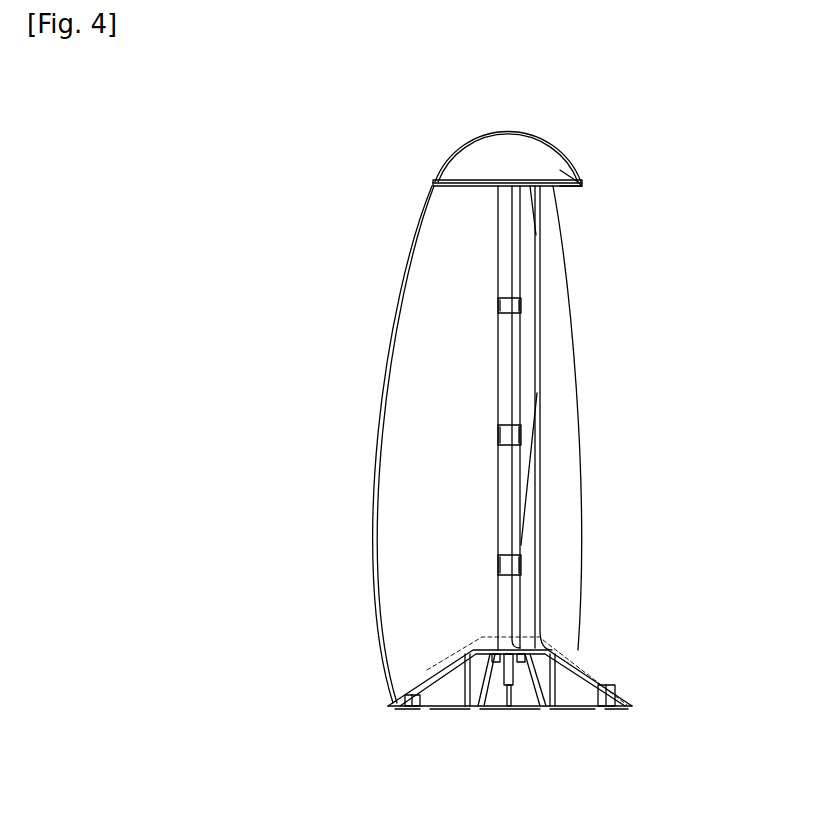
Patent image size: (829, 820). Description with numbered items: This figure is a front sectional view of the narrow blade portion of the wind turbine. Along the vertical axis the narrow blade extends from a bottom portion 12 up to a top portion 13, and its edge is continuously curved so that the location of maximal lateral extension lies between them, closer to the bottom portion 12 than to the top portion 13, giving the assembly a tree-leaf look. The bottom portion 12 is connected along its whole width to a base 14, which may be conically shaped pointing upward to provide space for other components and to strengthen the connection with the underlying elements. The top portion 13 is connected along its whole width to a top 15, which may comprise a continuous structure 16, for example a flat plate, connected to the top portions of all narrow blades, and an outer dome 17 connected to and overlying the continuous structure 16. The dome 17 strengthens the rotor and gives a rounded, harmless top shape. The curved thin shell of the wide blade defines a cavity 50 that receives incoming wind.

The bottom portion 12 is at (428, 672).
The top portion 13 is at (467, 185).
The base 14 is at (437, 685).
The top 15 is at (452, 157).
The continuous structure 16 is at (563, 180).
The outer dome 17 is at (535, 140).
The cavity 50 is at (410, 433).